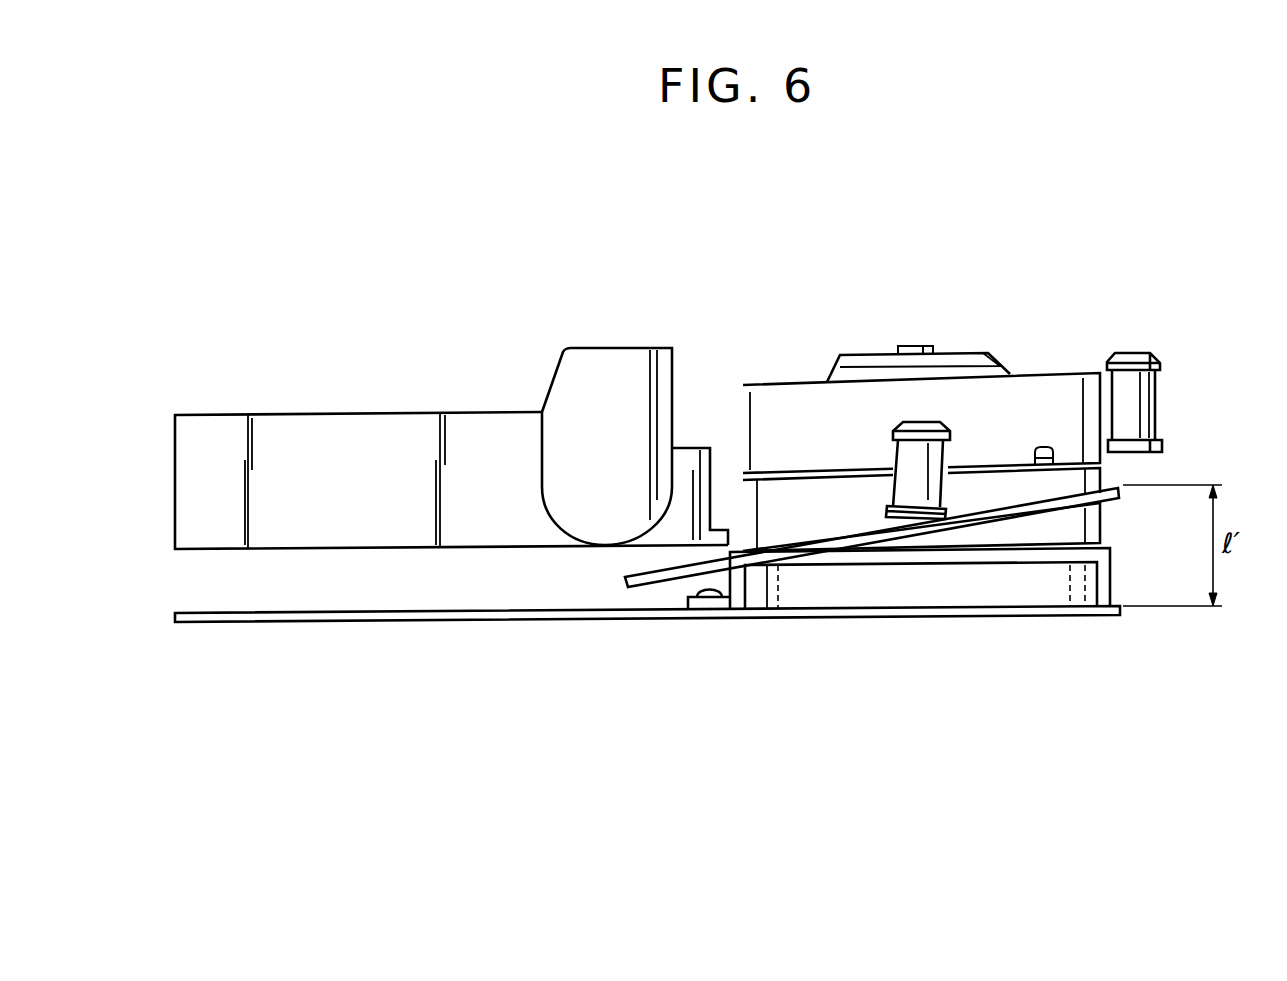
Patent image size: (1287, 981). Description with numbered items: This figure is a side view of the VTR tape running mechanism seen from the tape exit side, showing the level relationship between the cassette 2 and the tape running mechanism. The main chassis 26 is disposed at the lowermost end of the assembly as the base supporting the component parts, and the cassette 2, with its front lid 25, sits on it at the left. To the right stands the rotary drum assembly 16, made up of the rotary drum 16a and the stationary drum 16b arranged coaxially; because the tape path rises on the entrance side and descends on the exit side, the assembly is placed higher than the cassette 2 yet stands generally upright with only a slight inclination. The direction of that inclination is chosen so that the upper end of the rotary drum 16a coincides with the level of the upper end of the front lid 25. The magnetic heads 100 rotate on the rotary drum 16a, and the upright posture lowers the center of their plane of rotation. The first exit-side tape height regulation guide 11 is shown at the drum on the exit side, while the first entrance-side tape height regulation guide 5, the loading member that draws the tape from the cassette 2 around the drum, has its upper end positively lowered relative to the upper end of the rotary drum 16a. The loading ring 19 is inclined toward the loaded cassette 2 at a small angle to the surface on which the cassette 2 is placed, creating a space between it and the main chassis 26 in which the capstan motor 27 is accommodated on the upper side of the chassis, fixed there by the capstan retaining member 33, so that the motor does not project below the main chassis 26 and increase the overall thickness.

The cassette 2 is at (375, 445).
The front lid 25 is at (628, 380).
The rotary drum assembly 16 is at (1078, 380).
The rotary drum 16a is at (973, 407).
The stationary drum 16b is at (985, 535).
The first exit-side tape height regulation guide 11 is at (903, 420).
The magnetic heads 100 is at (1043, 447).
The first entrance-side tape height regulation guide 5 is at (1149, 353).
The loading ring 19 is at (643, 588).
The capstan retaining member 33 is at (737, 606).
The main chassis 26 is at (337, 623).
The capstan motor 27 is at (1077, 598).